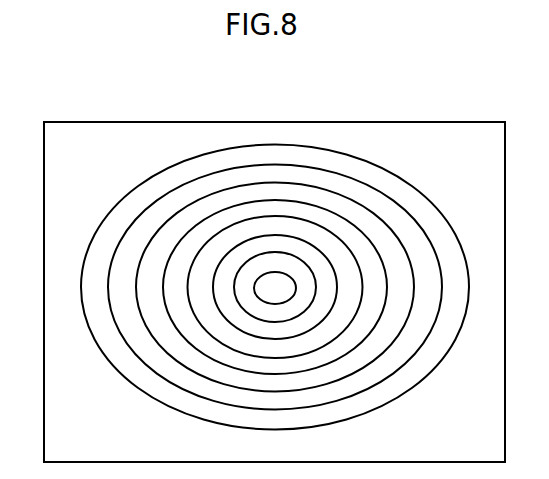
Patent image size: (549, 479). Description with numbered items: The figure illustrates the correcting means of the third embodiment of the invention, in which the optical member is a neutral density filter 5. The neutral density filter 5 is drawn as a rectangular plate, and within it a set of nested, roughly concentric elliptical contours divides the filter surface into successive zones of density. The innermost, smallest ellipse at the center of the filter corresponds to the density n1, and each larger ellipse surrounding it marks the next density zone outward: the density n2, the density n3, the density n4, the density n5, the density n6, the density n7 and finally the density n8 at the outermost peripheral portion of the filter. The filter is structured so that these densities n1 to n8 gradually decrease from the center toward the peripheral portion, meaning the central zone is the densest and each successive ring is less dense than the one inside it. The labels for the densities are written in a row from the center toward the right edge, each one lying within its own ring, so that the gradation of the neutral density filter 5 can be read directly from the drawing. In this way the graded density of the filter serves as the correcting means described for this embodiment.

The neutral density filter 5 is at (428, 131).
The density n1 is at (275, 288).
The density n2 is at (276, 287).
The density n3 is at (275, 287).
The density n4 is at (276, 287).
The density n5 is at (275, 287).
The density n6 is at (275, 287).
The density n7 is at (275, 287).
The density n8 is at (275, 287).